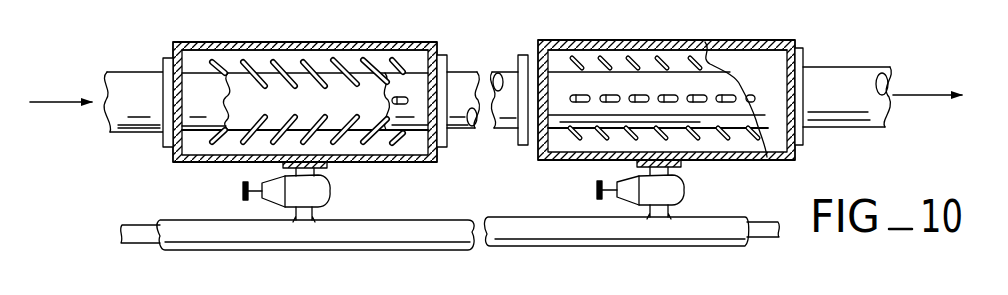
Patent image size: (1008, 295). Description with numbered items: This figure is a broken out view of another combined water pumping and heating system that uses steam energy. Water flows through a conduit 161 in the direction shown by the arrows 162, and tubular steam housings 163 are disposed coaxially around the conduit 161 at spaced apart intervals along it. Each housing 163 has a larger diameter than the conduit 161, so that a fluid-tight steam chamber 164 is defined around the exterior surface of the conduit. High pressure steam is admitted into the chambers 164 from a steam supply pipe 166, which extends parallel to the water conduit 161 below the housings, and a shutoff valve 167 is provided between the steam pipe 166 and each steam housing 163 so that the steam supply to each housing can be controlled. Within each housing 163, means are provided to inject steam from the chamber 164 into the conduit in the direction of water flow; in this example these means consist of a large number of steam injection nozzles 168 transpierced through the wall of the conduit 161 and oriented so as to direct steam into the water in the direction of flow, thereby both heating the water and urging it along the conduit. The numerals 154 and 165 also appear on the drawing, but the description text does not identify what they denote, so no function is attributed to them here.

The housing section 154 is at (214, 0).
The conduit 161 is at (125, 72).
The arrows 162 is at (50, 102).
The tubular steam housings 163 is at (250, 36).
The steam chambers 164 is at (387, 52).
The conduit wall inside housing 165 is at (536, 99).
The steam supply pipe 166 is at (178, 251).
The shutoff valve 167 is at (331, 195).
The steam injection nozzles 168 is at (303, 88).